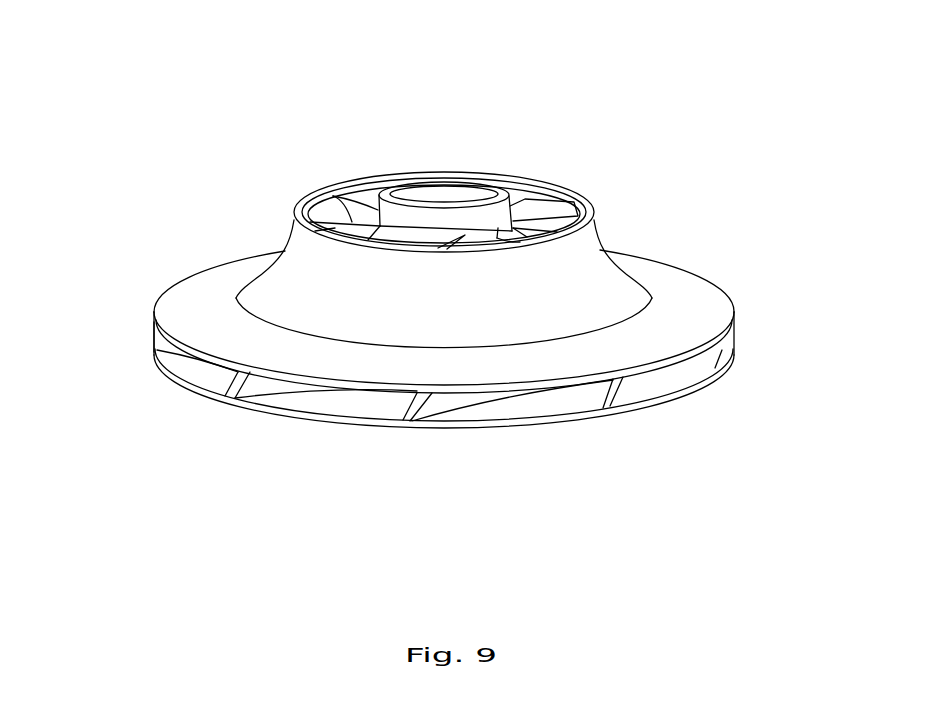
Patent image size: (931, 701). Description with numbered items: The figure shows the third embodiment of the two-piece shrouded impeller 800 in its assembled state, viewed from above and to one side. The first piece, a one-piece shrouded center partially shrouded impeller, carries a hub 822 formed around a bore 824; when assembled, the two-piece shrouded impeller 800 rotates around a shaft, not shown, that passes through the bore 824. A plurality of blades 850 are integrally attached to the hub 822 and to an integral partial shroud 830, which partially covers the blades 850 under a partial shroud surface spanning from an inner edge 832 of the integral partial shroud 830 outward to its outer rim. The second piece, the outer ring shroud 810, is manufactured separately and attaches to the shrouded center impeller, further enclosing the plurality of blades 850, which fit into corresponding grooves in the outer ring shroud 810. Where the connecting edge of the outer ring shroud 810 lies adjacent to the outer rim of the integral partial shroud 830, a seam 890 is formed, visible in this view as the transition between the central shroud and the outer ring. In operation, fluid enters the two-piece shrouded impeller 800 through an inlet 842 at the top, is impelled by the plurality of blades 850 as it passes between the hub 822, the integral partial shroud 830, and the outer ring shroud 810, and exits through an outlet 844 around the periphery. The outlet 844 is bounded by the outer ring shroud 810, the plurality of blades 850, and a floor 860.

The two-piece shrouded impeller 800 is at (136, 49).
The outer ring shroud 810 is at (690, 326).
The hub 822 is at (318, 190).
The bore 824 is at (443, 193).
The integral partial shroud 830 is at (602, 283).
The inner edge 832 is at (595, 213).
The inlet 842 is at (313, 212).
The outlet 844 is at (149, 336).
The plurality of blades 850 is at (541, 206).
The floor 860 is at (665, 395).
The seam 890 is at (235, 292).